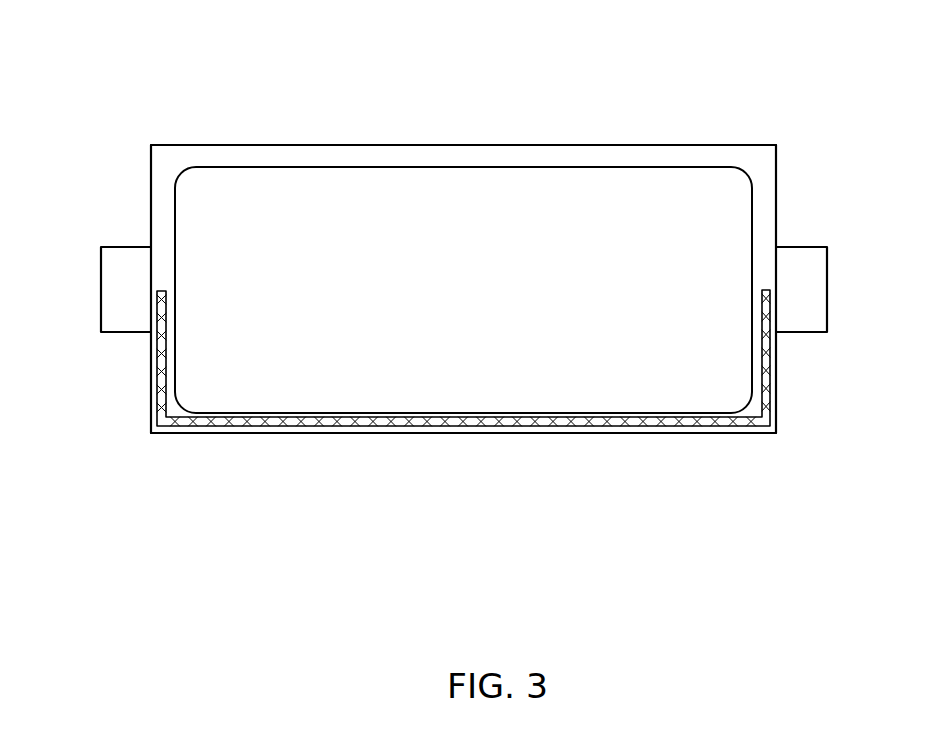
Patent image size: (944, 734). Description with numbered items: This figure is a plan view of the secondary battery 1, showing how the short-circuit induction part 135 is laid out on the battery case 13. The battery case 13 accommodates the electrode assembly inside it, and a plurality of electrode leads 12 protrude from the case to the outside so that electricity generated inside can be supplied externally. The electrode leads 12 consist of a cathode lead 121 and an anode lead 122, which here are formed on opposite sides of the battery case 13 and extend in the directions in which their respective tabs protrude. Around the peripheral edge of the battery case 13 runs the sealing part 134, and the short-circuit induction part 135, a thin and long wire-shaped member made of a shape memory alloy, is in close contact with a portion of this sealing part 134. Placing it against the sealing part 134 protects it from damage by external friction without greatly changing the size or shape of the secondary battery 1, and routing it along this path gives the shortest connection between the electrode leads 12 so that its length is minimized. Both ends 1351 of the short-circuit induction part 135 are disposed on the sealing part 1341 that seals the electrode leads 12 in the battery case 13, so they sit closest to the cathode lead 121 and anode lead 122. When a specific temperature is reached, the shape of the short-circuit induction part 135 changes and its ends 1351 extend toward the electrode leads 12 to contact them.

The secondary battery 1 is at (449, 72).
The electrode leads 12 is at (192, 518).
The cathode lead 121 is at (805, 322).
The anode lead 122 is at (127, 320).
The battery case 13 is at (716, 145).
The sealing part 134 is at (286, 156).
The sealing part sealing the electrode leads 1341 is at (163, 273).
The short-circuit induction part 135 is at (438, 425).
The ends of short-circuit induction part 1351 is at (160, 305).